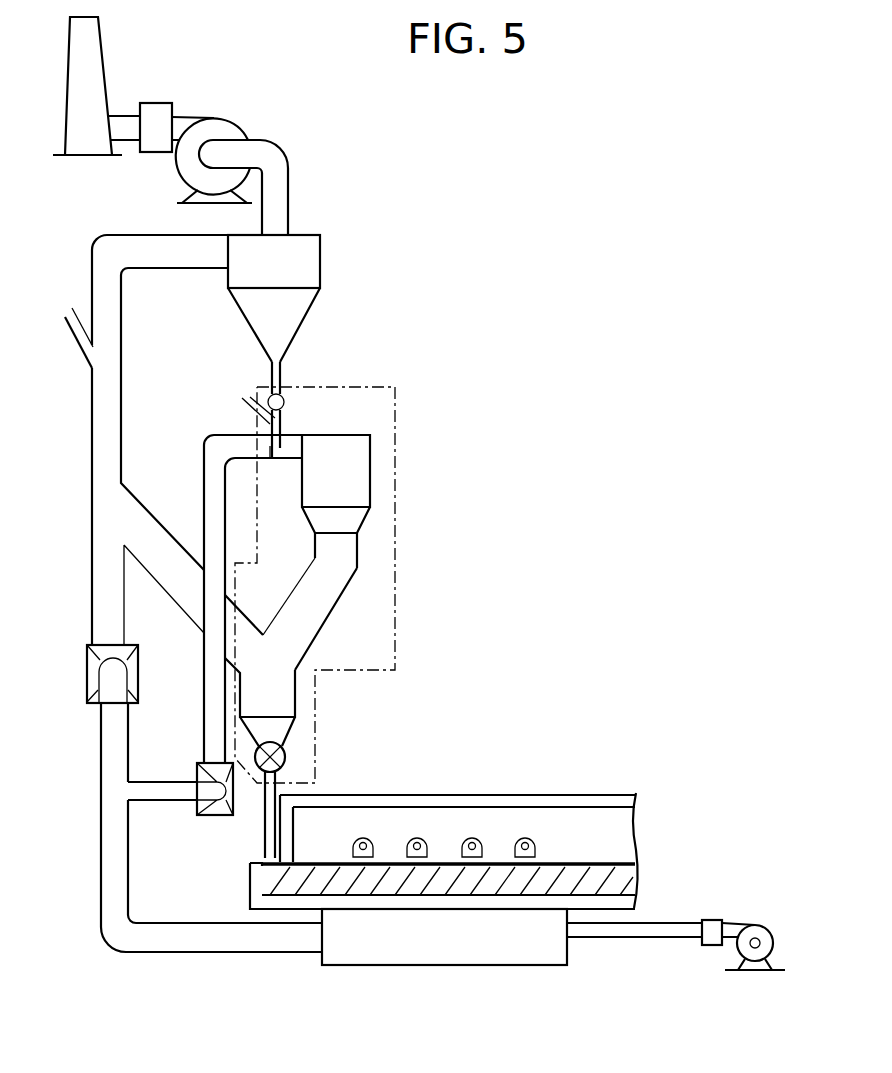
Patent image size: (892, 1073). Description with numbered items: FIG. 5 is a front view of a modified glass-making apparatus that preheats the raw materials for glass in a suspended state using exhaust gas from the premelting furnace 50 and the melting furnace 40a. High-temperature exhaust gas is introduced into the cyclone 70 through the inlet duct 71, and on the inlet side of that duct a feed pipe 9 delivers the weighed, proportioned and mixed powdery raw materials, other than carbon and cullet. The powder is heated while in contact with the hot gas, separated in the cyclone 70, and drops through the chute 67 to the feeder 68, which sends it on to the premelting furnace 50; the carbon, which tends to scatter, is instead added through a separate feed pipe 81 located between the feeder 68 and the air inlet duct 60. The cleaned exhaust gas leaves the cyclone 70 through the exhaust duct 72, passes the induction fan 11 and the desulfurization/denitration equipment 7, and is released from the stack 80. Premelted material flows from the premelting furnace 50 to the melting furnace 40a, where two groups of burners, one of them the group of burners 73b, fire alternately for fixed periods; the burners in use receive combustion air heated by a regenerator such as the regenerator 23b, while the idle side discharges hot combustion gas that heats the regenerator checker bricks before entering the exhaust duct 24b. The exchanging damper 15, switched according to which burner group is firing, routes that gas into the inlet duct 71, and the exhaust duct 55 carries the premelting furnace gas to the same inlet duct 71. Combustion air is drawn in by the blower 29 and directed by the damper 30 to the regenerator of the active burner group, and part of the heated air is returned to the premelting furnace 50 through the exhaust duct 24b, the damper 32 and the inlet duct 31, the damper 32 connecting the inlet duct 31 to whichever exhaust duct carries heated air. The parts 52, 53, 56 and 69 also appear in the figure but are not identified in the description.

The stack 80 is at (92, 33).
The desulfurization/denitration equipment 7 is at (157, 110).
The induction fan 11 is at (211, 120).
The exhaust duct 72 is at (282, 180).
The cyclone 70 is at (310, 258).
The inlet duct 71 is at (113, 422).
The feed pipe 9 is at (72, 323).
The exhaust duct 55 is at (158, 575).
The exchanging damper 15 is at (132, 677).
The exhaust duct 24b is at (180, 940).
The damper 32 is at (215, 814).
The inlet duct 31 is at (206, 467).
The air inlet duct 60 is at (287, 445).
The outlet 69 is at (276, 440).
The chute 67 is at (271, 372).
The feeder 68 is at (279, 399).
The feed pipe 81 is at (241, 410).
The premelting furnace 50 is at (360, 387).
The hopper 52 is at (352, 470).
The inclined conduit 53 is at (313, 612).
The discharge hopper 56 is at (282, 702).
The melting furnace 40a is at (487, 830).
The group of burners 73b is at (417, 838).
The regenerator 23b is at (368, 952).
The damper 30 is at (712, 920).
The blower 29 is at (755, 925).